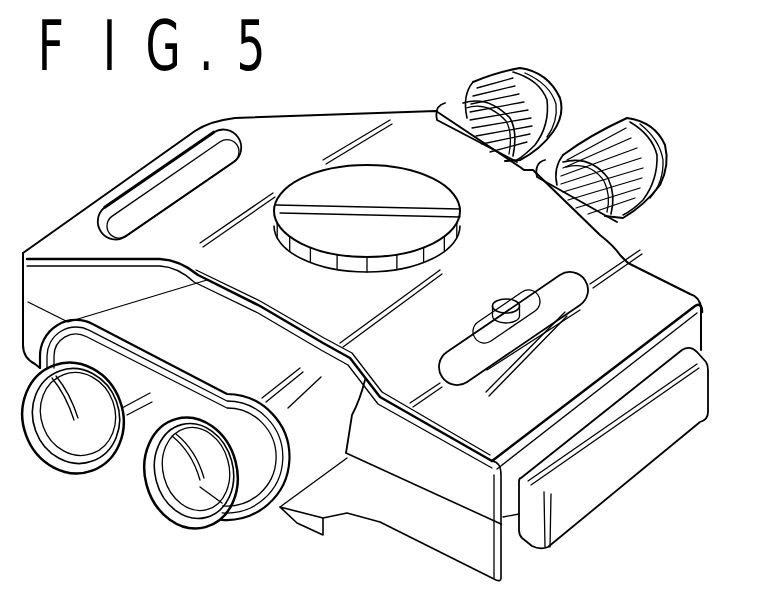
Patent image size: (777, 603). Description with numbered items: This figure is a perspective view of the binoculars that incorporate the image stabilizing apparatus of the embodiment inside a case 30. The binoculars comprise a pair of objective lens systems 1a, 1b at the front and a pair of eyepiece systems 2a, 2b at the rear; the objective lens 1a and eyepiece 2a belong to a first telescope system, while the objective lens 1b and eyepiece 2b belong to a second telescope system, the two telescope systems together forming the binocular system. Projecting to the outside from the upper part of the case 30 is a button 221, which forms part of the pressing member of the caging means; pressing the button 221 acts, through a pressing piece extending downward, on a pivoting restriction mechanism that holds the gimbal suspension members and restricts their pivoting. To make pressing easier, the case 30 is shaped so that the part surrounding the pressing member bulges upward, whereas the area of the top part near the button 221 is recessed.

The objective lens system 1a is at (87, 482).
The objective lens system 1b is at (167, 527).
The eyepiece system 2a is at (518, 56).
The eyepiece system 2b is at (681, 165).
The case 30 is at (657, 300).
The button 221 is at (503, 300).